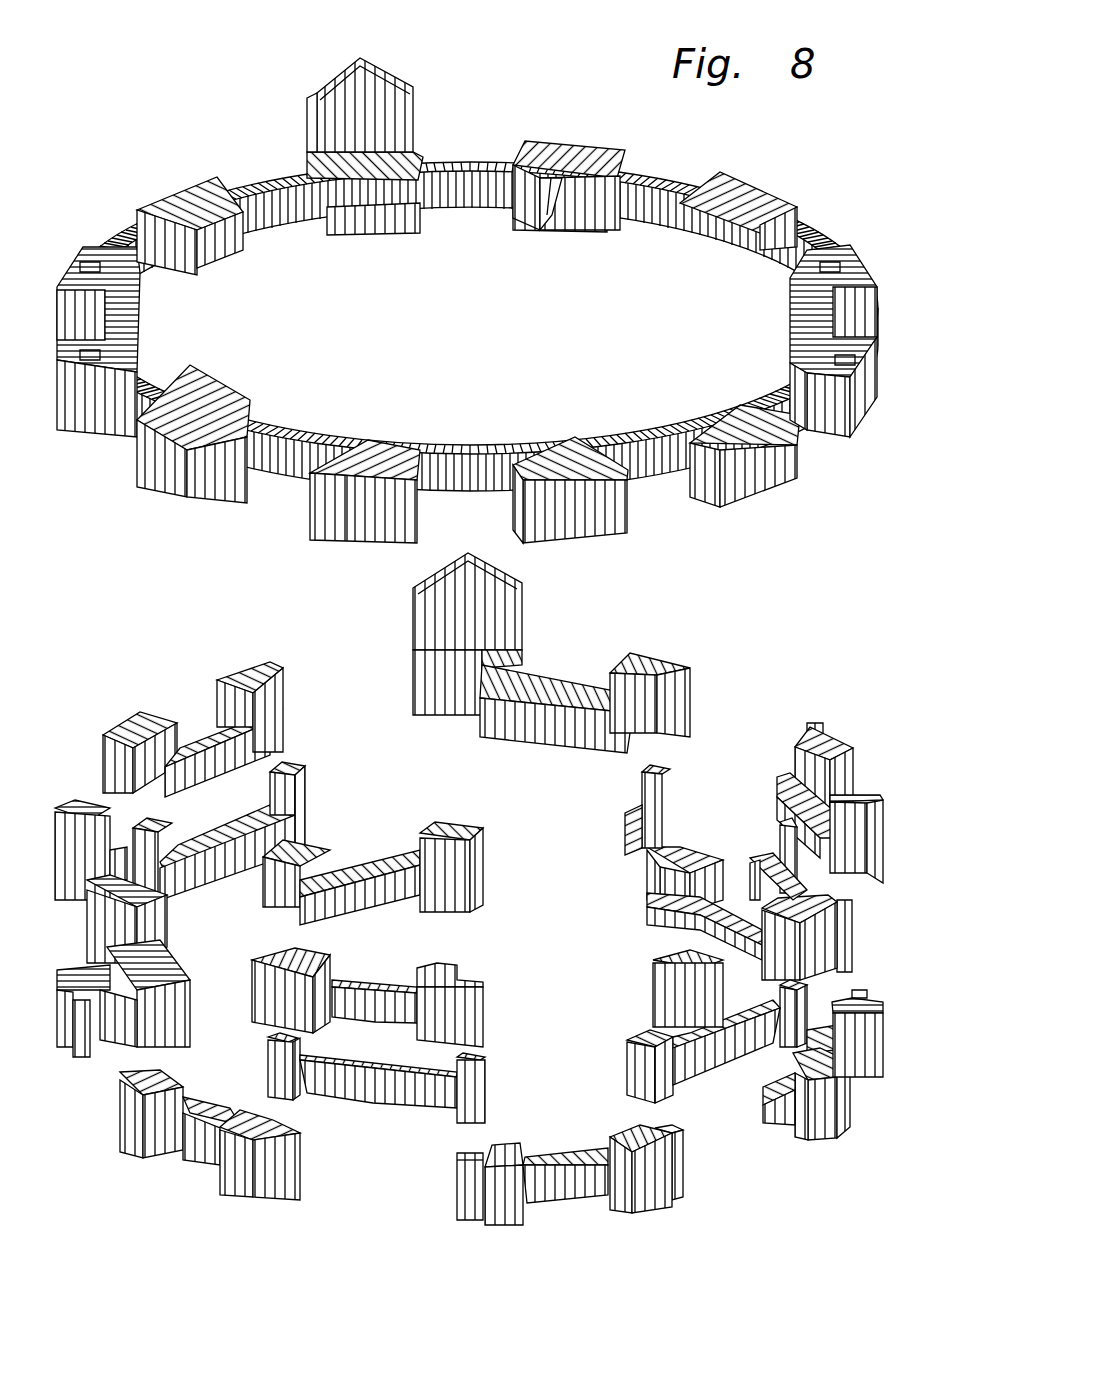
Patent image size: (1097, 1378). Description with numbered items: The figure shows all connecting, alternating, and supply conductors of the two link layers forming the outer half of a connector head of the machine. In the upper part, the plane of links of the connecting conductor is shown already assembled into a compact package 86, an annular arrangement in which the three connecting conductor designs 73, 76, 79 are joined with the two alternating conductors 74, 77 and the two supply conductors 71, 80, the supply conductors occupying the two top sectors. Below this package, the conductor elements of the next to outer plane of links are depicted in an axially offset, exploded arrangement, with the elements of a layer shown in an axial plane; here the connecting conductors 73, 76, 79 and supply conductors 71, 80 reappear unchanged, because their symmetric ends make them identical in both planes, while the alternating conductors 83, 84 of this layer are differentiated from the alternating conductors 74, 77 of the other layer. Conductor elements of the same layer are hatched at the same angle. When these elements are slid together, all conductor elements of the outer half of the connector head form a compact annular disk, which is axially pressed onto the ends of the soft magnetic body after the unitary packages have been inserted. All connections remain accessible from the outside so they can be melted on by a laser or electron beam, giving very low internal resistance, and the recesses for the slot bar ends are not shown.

The supply conductor 71 is at (345, 100).
The connecting conductor 73 is at (757, 210).
The alternating conductor 74 is at (528, 158).
The connecting conductor 76 is at (637, 182).
The alternating conductor 77 is at (223, 197).
The connecting conductor 79 is at (222, 217).
The supply conductor 80 is at (557, 197).
The alternating conductor 83 is at (638, 668).
The alternating conductor 84 is at (400, 860).
The compact package 86 is at (172, 468).